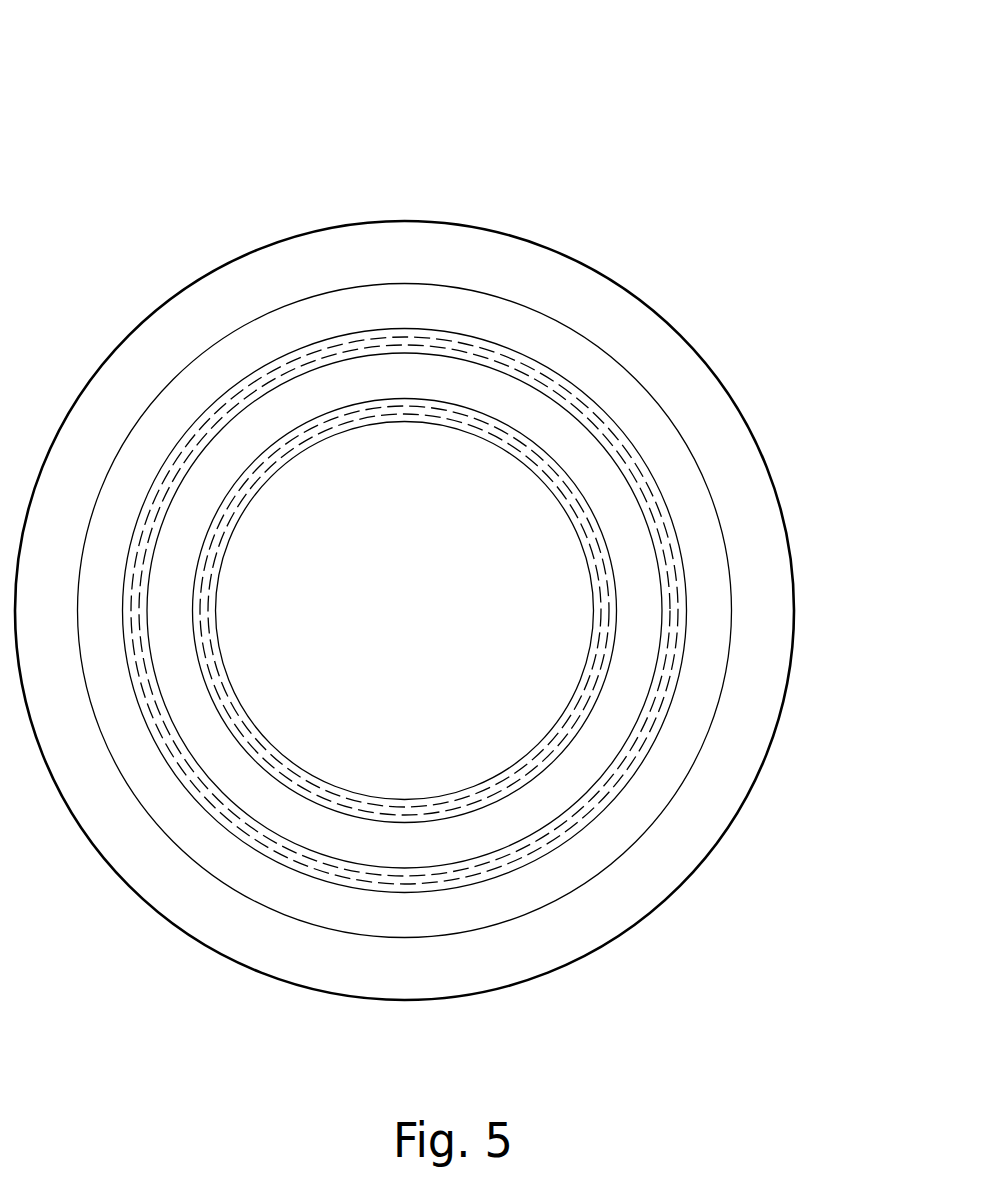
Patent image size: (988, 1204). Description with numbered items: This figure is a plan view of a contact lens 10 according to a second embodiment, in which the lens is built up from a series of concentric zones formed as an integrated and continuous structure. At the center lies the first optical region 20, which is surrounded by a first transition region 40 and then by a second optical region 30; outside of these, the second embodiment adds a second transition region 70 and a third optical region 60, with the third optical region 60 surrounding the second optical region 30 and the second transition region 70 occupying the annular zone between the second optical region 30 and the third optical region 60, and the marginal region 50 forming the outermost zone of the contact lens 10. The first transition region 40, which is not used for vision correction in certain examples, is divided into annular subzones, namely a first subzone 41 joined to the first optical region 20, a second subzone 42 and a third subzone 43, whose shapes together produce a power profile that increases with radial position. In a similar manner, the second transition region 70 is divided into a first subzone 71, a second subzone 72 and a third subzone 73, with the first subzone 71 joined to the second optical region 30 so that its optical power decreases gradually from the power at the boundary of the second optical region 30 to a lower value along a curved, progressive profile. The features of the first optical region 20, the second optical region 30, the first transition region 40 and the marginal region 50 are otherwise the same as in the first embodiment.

The contact lens 10 is at (469, 532).
The first optical region 20 is at (455, 477).
The second optical region 30 is at (608, 492).
The first transition region 40 is at (559, 611).
The first subzone 41 is at (598, 558).
The second subzone 42 is at (600, 598).
The third subzone 43 is at (600, 642).
The marginal region 50 is at (728, 700).
The third optical region 60 is at (650, 793).
The second transition region 70 is at (495, 679).
The first subzone 71 is at (570, 822).
The second subzone 72 is at (560, 848).
The third subzone 73 is at (545, 865).